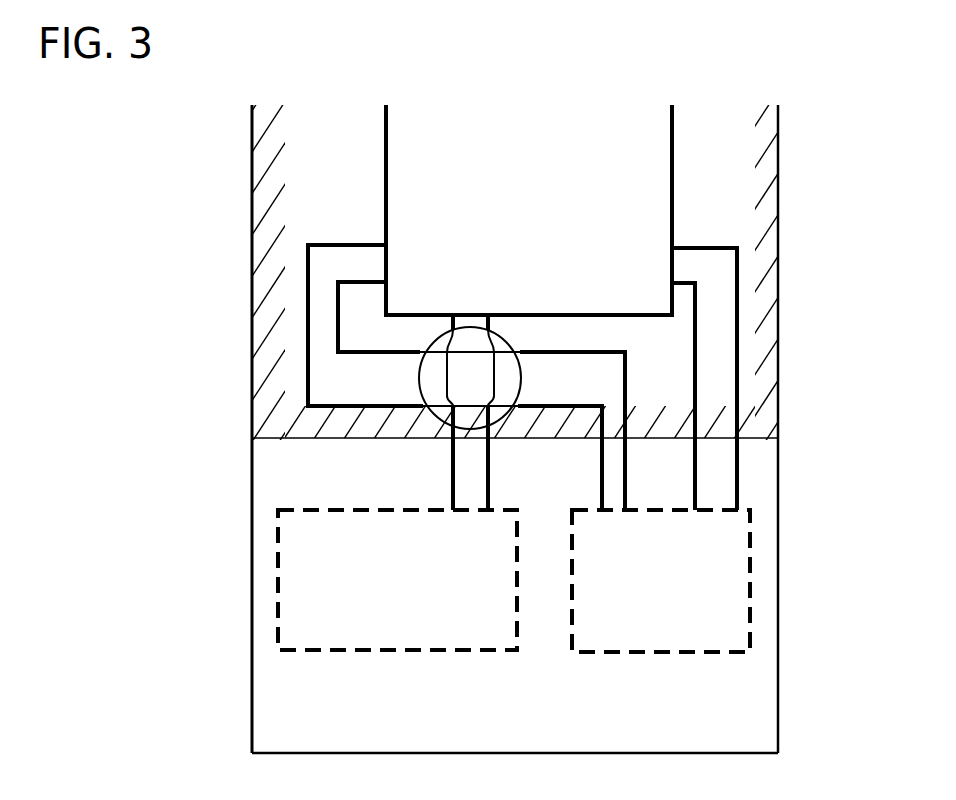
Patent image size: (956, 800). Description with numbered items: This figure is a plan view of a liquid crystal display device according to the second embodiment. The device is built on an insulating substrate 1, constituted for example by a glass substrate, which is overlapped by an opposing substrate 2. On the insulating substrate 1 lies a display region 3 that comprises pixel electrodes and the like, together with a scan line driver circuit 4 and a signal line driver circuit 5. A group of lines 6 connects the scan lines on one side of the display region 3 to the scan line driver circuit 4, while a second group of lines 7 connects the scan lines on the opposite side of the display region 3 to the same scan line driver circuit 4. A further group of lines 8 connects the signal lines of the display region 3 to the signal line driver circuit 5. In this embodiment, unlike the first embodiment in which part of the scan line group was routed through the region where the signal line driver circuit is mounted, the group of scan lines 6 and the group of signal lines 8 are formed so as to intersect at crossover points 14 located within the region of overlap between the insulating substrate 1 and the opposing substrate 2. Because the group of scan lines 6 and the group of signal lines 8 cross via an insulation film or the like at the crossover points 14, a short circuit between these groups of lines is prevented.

The insulating substrate 1 is at (780, 349).
The opposing substrate 2 is at (728, 204).
The display region 3 is at (672, 165).
The scan line driver circuit 4 is at (717, 580).
The signal line driver circuit 5 is at (308, 567).
The group of lines 6 is at (325, 318).
The group of lines 7 is at (713, 350).
The group of lines 8 is at (468, 480).
The crossover points 14 is at (418, 372).